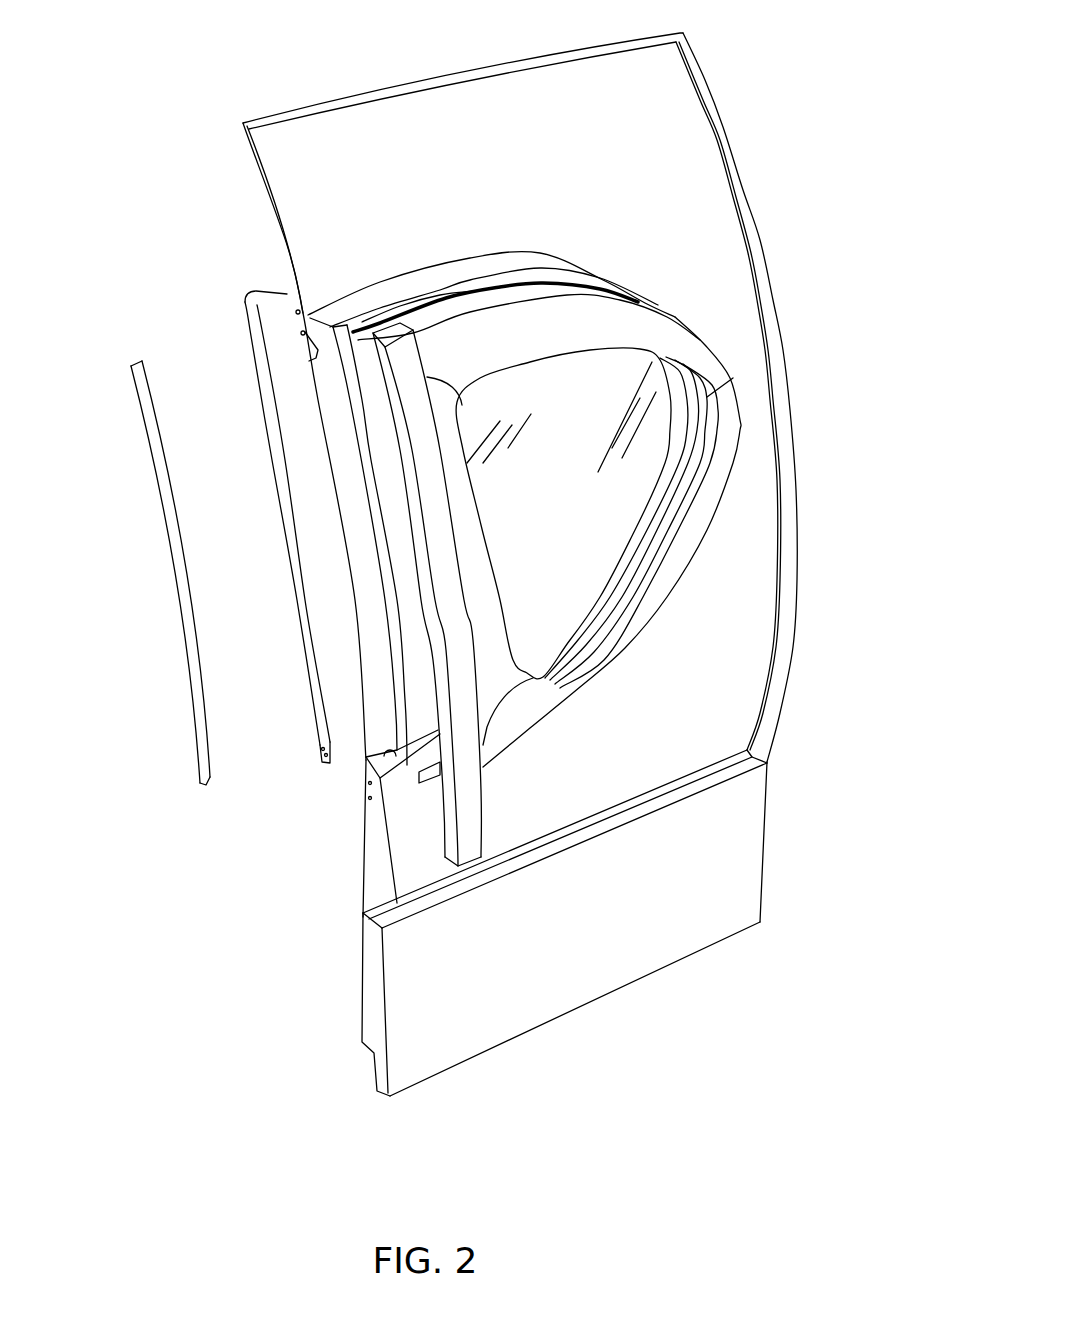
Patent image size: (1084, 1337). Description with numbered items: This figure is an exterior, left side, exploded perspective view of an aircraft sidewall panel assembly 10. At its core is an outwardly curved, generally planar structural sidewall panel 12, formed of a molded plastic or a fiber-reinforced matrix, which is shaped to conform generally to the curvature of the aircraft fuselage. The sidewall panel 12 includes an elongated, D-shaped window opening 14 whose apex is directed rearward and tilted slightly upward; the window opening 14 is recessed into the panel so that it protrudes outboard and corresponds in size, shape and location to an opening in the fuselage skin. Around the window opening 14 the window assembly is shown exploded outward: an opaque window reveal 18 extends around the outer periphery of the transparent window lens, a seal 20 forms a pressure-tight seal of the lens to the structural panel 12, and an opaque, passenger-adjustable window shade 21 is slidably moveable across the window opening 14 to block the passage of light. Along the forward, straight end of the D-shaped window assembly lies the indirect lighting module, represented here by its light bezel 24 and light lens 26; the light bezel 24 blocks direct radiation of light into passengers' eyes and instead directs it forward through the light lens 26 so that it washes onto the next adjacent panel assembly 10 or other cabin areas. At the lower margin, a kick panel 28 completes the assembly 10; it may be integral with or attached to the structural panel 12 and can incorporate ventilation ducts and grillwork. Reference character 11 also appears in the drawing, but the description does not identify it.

The panel assembly 10 is at (847, 425).
The pillar reinforcement bar 11 is at (478, 828).
The structural sidewall panel 12 is at (333, 227).
The window opening 14 is at (526, 523).
The window reveal 18 is at (680, 342).
The seal 20 is at (648, 283).
The window shade 21 is at (396, 686).
The light bezel 24 is at (272, 428).
The light lens 26 is at (189, 720).
The kick panel 28 is at (515, 1012).